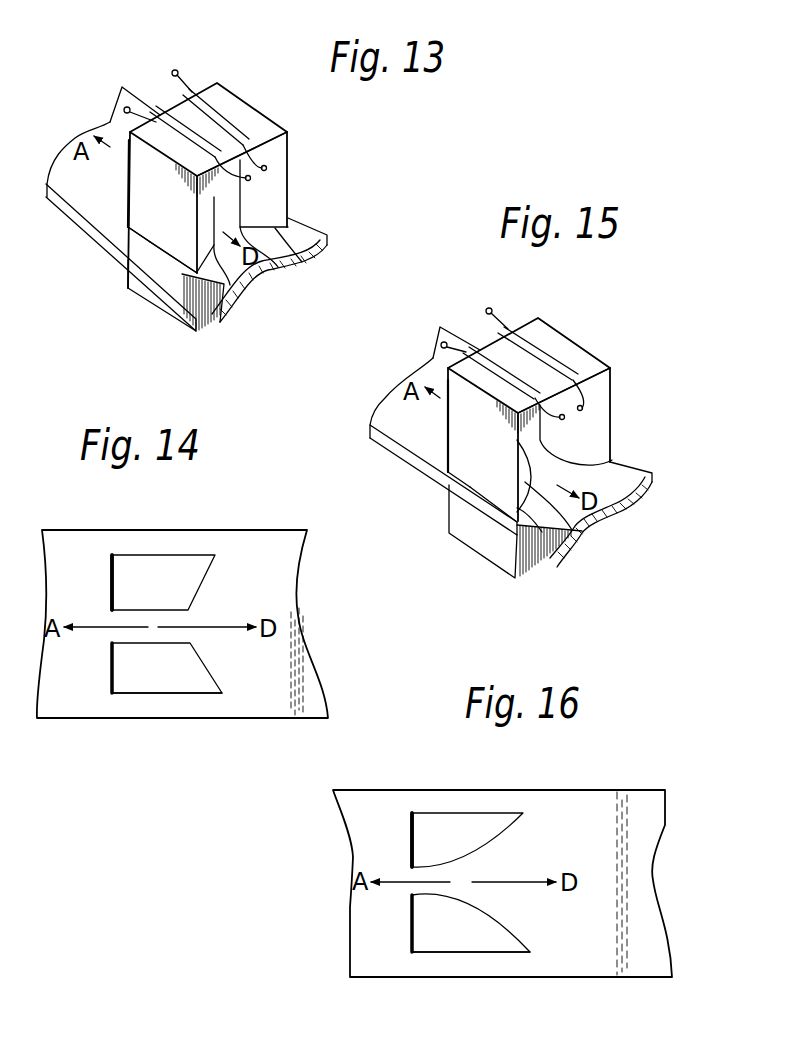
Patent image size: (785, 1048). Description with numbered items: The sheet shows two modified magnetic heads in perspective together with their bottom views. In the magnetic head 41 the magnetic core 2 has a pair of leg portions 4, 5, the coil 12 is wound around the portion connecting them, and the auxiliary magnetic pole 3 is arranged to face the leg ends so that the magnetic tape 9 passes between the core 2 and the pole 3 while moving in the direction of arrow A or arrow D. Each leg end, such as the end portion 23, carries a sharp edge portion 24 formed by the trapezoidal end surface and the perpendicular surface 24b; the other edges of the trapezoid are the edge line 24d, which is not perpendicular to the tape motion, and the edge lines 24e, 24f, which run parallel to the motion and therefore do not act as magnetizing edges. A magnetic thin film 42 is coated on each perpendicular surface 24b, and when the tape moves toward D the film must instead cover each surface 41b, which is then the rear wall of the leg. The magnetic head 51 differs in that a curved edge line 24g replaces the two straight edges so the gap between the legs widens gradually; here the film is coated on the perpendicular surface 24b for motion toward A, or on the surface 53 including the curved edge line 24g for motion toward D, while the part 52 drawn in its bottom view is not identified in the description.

In FIG. 13, the magnetic core 2 is at (264, 115).
In FIG. 15, the magnetic core 2 is at (578, 342).
In FIG. 13, the auxiliary magnetic pole 3 is at (165, 297).
In FIG. 15, the auxiliary magnetic pole 3 is at (480, 537).
In FIG. 13, the leg portion 4 is at (290, 160).
In FIG. 15, the leg portion 4 is at (610, 398).
In FIG. 13, the leg portion 5 is at (135, 200).
In FIG. 15, the leg portion 5 is at (475, 450).
In FIG. 13, the magnetic tape 9 is at (327, 238).
In FIG. 14, the magnetic tape 9 is at (293, 556).
In FIG. 15, the magnetic tape 9 is at (653, 485).
In FIG. 16, the magnetic tape 9 is at (658, 825).
In FIG. 13, the coil 12 is at (178, 71).
In FIG. 15, the coil 12 is at (492, 309).
In FIG. 13, the end portion 23 is at (183, 252).
In FIG. 13, the sharp edge portion 24 is at (276, 232).
In FIG. 13, the perpendicular surface 24b is at (128, 183).
In FIG. 14, the perpendicular surface 24b is at (112, 583).
In FIG. 15, the perpendicular surface 24b is at (447, 412).
In FIG. 16, the perpendicular surface 24b is at (412, 845).
In FIG. 13, the edge line 24d is at (302, 260).
In FIG. 13, the edge line 24e is at (287, 270).
In FIG. 13, the edge line 24f is at (130, 280).
In FIG. 14, the edge line 24f is at (175, 695).
In FIG. 15, the edge line 24f is at (475, 488).
In FIG. 16, the edge line 24f is at (478, 953).
In FIG. 15, the curved edge line 24g is at (537, 567).
In FIG. 16, the curved edge line 24g is at (512, 822).
In FIG. 13, the magnetic head 41 is at (258, 68).
In FIG. 13, the surface 41b is at (276, 187).
In FIG. 14, the surface 41b is at (203, 586).
In FIG. 13, the magnetic thin film 42 is at (128, 140).
In FIG. 14, the magnetic thin film 42 is at (112, 555).
In FIG. 15, the magnetic head 51 is at (582, 312).
In FIG. 15, the bent-up tab 52 is at (444, 430).
In FIG. 16, the bent-up tab 52 is at (412, 815).
In FIG. 15, the surface 53 is at (595, 432).